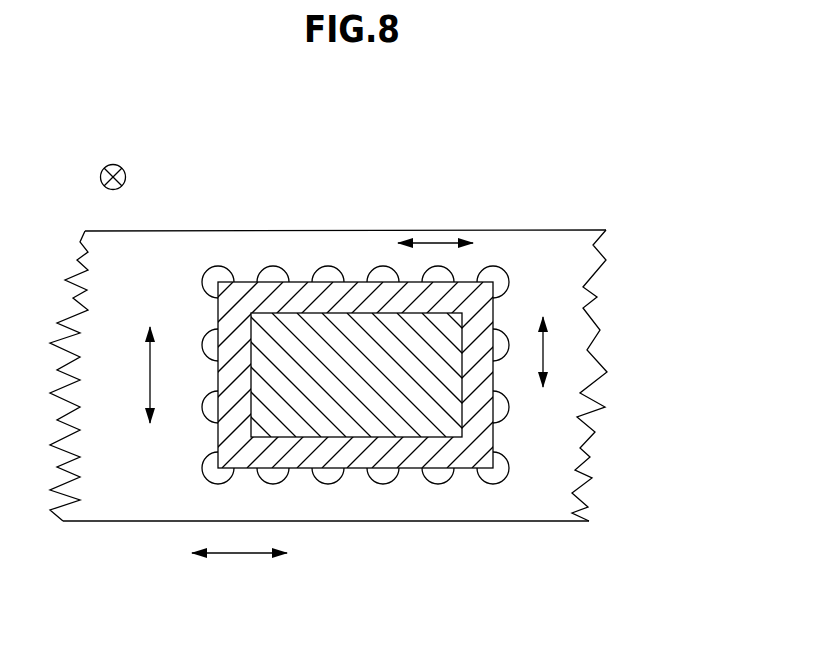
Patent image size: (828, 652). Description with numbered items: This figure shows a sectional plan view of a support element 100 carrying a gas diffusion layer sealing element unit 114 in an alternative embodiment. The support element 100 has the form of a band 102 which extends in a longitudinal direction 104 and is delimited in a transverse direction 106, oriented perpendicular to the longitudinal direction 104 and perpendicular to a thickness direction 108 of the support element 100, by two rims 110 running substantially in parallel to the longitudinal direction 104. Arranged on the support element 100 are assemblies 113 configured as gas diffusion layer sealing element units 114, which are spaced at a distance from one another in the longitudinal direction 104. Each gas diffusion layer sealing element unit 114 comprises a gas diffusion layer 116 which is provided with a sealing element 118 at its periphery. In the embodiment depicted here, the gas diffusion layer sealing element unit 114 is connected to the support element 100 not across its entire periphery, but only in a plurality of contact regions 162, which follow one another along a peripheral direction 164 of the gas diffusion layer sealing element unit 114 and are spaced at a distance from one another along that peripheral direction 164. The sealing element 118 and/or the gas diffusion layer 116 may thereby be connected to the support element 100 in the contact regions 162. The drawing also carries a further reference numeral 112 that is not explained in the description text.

The support element 100 is at (122, 255).
The band 102 is at (568, 296).
The longitudinal direction 104 is at (240, 555).
The transverse direction 106 is at (152, 375).
The thickness direction 108 is at (110, 164).
The rims 110 is at (548, 230).
The vertical gap 112 is at (558, 318).
The assemblies 113 is at (360, 480).
The gas diffusion layer sealing element unit 114 is at (415, 480).
The gas diffusion layer 116 is at (397, 368).
The sealing element 118 is at (452, 292).
The contact regions 162 is at (246, 278).
The peripheral direction 164 is at (437, 243).